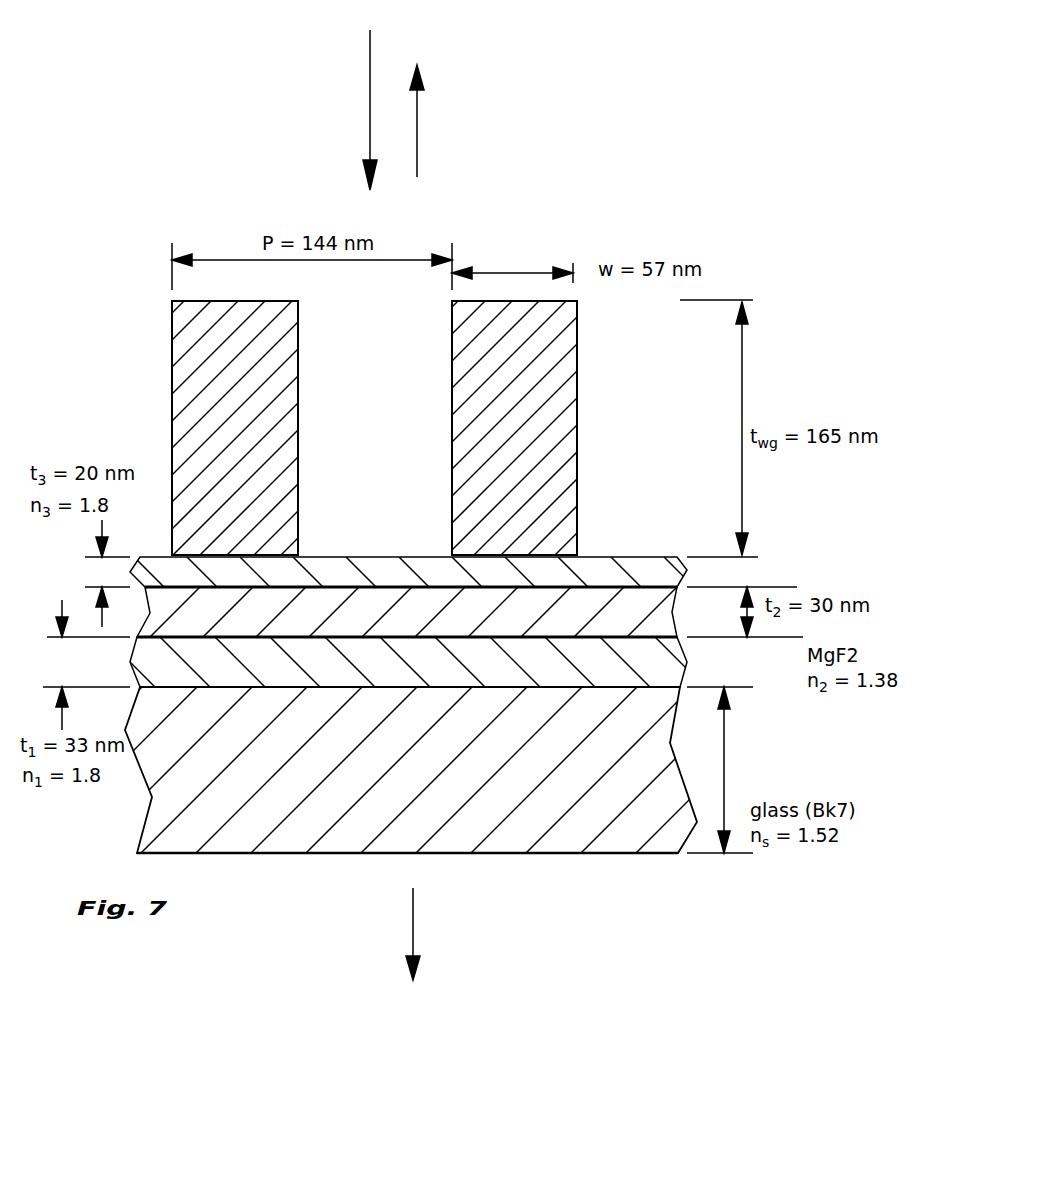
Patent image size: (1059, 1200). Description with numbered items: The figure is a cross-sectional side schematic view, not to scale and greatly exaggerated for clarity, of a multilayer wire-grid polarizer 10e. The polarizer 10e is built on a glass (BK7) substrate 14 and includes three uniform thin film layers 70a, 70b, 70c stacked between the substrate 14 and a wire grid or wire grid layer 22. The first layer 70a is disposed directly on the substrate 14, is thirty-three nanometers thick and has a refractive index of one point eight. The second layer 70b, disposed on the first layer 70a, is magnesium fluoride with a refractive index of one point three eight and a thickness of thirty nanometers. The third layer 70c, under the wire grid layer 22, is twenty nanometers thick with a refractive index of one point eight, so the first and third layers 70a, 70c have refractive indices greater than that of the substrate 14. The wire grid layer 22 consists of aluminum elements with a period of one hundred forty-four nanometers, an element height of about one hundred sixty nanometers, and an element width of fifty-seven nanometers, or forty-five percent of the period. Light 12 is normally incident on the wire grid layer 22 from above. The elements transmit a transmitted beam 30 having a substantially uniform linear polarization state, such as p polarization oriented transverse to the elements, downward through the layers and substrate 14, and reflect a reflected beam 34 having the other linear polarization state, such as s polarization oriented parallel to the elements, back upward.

The light 12 is at (370, 117).
The reflected beam 34 is at (417, 125).
The wire grid layer 22 is at (167, 403).
The glass substrate 14 is at (658, 853).
The first layer 70a is at (603, 655).
The second layer 70b is at (572, 625).
The third layer 70c is at (538, 575).
The multilayer wire-grid polarizer 10e is at (422, 670).
The transmitted beam 30 is at (411, 920).